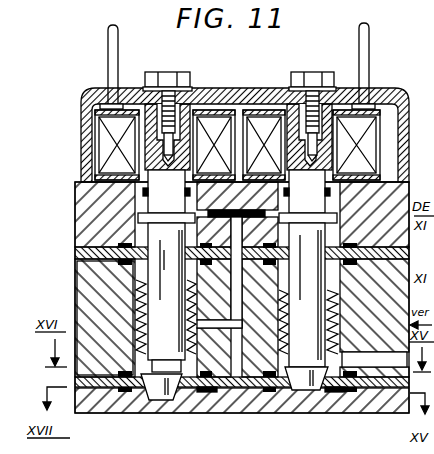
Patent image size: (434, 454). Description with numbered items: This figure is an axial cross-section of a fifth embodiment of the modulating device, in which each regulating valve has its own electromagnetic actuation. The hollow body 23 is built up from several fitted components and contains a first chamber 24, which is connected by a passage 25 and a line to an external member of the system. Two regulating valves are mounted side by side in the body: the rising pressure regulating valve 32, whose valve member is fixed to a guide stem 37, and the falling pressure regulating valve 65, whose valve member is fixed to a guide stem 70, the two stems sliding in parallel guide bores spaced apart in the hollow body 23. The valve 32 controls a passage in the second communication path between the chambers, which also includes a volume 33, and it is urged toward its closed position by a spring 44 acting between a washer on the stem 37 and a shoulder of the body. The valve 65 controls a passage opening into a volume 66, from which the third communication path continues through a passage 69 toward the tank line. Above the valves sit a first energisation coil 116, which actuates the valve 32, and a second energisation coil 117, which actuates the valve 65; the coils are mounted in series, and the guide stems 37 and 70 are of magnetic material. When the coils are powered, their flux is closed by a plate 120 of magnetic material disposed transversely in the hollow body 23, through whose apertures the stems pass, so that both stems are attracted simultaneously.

The hollow body 23 is at (70, 198).
The first energisation coil 116 is at (128, 112).
The second energisation coil 117 is at (346, 98).
The plate 120 is at (75, 274).
The guide stem 37 is at (178, 313).
The spring 44 is at (134, 343).
The first chamber 24 is at (197, 334).
The passage 25 is at (243, 310).
The guide stem 70 is at (317, 314).
The passage 69 is at (380, 356).
The rising pressure regulating valve 32 is at (160, 404).
The volume 33 is at (212, 396).
The falling pressure regulating valve 65 is at (304, 394).
The volume 66 is at (330, 392).